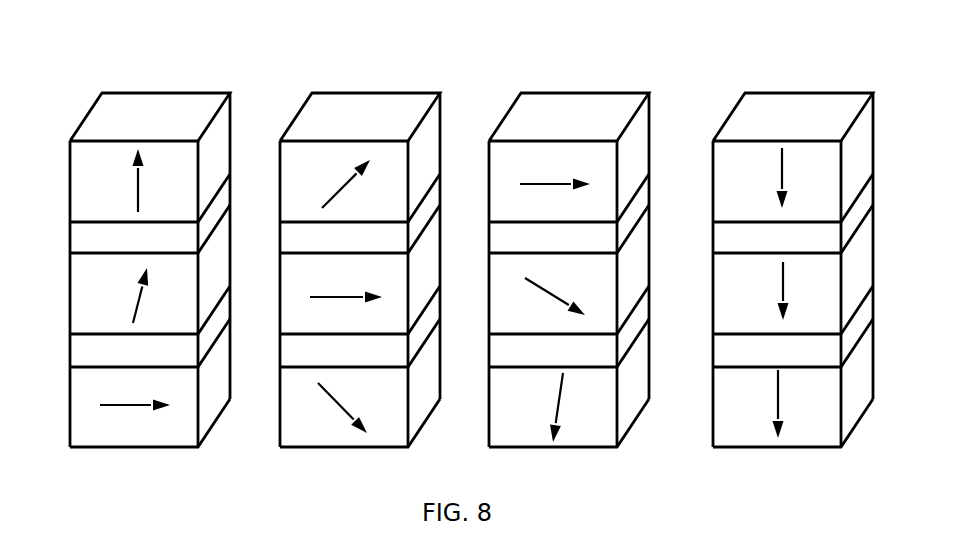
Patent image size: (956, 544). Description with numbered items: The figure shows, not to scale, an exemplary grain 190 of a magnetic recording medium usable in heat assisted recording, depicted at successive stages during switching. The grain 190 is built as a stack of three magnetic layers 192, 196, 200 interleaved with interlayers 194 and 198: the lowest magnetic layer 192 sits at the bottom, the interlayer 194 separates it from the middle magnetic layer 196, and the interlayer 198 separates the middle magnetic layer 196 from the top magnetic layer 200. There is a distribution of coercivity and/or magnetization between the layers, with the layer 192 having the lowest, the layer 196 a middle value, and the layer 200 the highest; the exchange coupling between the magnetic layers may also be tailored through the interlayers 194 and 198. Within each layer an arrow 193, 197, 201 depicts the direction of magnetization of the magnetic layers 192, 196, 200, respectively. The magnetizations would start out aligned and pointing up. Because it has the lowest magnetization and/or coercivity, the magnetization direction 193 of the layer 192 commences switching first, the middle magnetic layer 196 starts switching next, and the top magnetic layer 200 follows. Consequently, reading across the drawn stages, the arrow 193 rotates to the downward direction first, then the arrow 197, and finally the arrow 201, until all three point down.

The grain 190 is at (777, 73).
The magnetic layer 200 is at (457, 148).
The interlayer 198 is at (457, 210).
The magnetic layer 196 is at (457, 284).
The interlayer 194 is at (457, 361).
The magnetic layer 192 is at (457, 430).
The arrow 201 is at (423, 319).
The arrow 197 is at (493, 376).
The arrow 193 is at (443, 430).